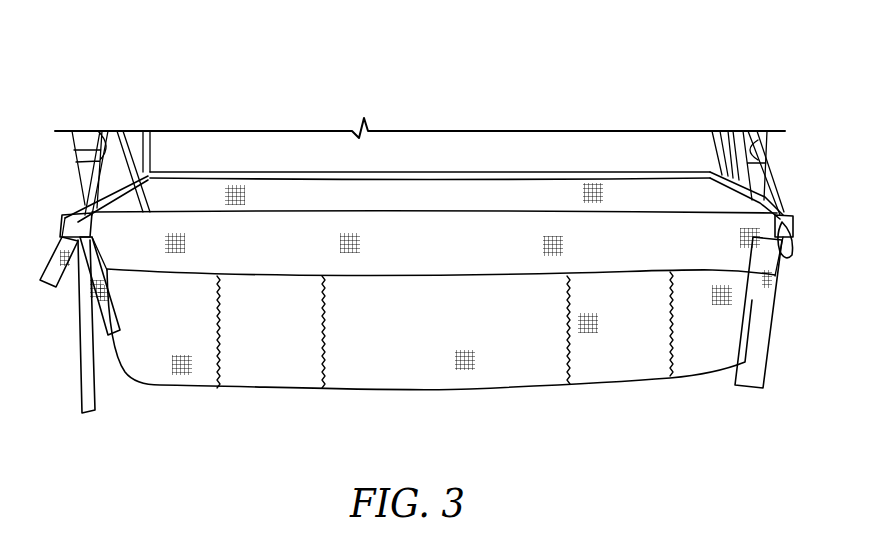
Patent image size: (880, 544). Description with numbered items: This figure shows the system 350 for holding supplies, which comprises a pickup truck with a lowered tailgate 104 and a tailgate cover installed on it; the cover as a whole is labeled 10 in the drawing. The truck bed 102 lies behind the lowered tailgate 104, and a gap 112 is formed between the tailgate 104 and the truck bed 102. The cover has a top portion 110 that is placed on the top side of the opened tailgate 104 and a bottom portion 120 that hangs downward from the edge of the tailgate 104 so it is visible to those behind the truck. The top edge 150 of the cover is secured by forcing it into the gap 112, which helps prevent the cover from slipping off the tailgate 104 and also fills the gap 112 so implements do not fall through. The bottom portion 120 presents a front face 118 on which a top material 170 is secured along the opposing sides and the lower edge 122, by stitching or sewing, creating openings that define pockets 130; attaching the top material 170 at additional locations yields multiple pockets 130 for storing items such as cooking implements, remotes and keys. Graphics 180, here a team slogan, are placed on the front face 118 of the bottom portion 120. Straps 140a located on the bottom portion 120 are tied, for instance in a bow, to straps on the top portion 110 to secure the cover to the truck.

The bleacher seat cover 10 is at (803, 274).
The truck bed 102 is at (314, 165).
The tailgate 104 is at (792, 222).
The top portion 110 is at (188, 205).
The gap 112 is at (513, 165).
The front face 118 is at (368, 380).
The bottom portion 120 is at (279, 313).
The lower edge 122 is at (624, 372).
The pocket 130 is at (188, 350).
The straps 140a is at (75, 290).
The top edge 150 is at (413, 165).
The top material 170 is at (85, 178).
The graphics 180 is at (419, 316).
The system 350 is at (296, 88).